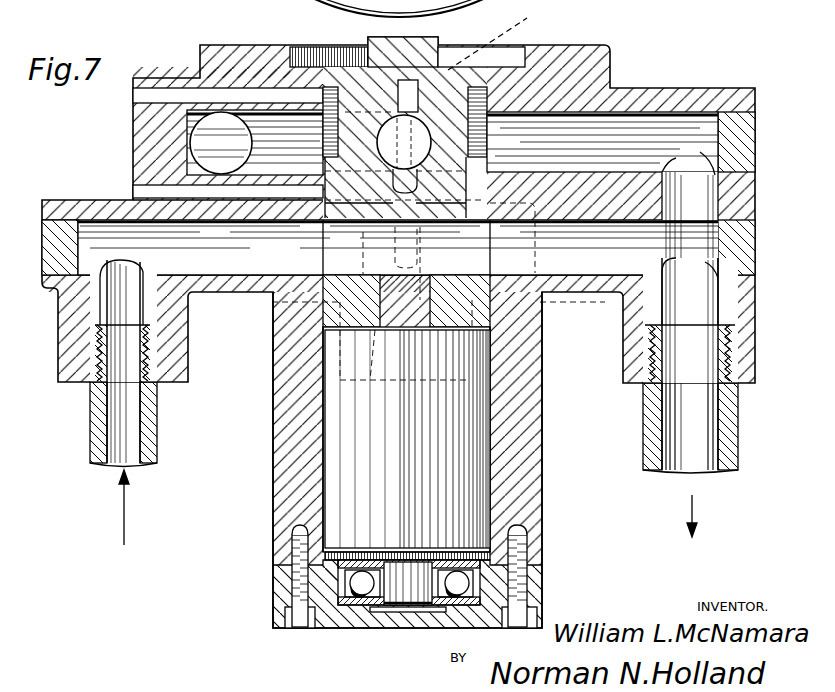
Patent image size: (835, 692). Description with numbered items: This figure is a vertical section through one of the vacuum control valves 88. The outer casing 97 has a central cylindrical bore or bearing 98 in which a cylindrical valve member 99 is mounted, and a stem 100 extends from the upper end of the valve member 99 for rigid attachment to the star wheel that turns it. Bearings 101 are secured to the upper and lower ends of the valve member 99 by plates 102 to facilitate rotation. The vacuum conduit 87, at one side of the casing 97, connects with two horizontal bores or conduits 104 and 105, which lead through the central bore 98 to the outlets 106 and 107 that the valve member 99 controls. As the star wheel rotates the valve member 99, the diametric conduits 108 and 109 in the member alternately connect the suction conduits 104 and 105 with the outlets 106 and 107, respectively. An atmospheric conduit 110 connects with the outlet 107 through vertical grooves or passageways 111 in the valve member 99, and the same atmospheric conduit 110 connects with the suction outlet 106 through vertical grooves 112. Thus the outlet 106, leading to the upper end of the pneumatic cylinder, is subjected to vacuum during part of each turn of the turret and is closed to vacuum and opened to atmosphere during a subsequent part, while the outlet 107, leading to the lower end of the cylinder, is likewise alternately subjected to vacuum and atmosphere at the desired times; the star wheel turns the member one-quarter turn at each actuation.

The vacuum control valve 88 is at (94, 154).
The atmospheric conduit 110 is at (234, 92).
The outlet 107 is at (203, 125).
The vertical grooves or passageways 111 is at (328, 86).
The stem 100 is at (430, 40).
The vertical grooves 112 is at (509, 39).
The diametric conduit 109 is at (418, 128).
The horizontal bore or conduit 105 is at (687, 142).
The diametric conduit 108 is at (490, 195).
The horizontal bore or conduit 104 is at (667, 248).
The outlet 106 is at (90, 435).
The vacuum conduit 87 is at (738, 420).
The cylindrical valve member 99 is at (330, 430).
The cylindrical bore or bearing 98 is at (325, 485).
The outer casing 97 is at (525, 478).
The bearings 101 is at (370, 620).
The plates 102 is at (347, 600).